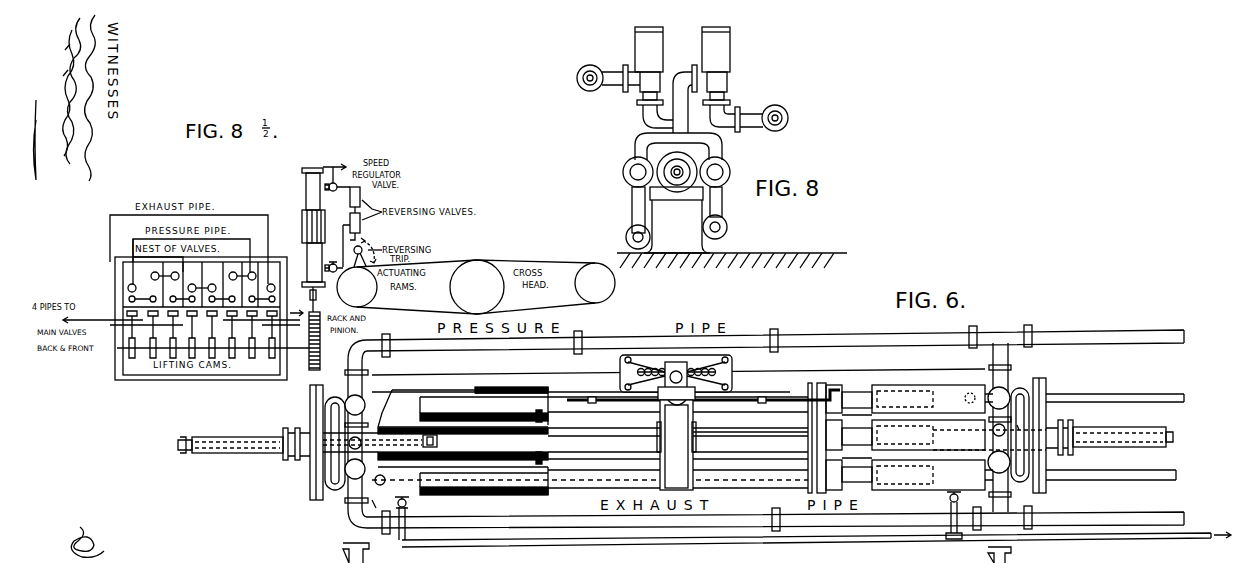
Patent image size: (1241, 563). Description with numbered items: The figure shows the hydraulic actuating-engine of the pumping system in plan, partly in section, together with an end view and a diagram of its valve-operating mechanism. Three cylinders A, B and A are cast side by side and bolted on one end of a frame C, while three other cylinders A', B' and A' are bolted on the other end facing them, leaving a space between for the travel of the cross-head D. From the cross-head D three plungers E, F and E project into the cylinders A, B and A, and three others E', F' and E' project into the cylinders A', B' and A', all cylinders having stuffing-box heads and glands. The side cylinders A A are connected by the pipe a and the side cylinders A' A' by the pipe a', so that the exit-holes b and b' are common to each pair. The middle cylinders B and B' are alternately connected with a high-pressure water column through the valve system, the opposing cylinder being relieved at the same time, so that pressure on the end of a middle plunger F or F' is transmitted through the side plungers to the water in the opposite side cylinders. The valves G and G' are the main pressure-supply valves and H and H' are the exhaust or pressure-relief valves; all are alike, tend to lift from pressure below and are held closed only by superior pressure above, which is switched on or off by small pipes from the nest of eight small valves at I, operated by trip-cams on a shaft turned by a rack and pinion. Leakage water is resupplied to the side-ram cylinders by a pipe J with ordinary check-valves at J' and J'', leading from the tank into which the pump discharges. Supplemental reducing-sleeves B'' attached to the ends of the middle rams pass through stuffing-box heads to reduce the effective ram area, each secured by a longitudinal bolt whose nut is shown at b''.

In FIG. 8, the pipe a is at (673, 162).
In FIG. 6, the pipe a is at (678, 430).
In FIG. 6, the pipe a' is at (1019, 433).
In FIG. 6, the exit-hole b is at (378, 507).
In FIG. 6, the exit-hole b' is at (968, 384).
In FIG. 6, the nut b'' is at (680, 442).
In FIG. 6, the side cylinder A is at (461, 441).
In FIG. 6, the side cylinder A' is at (996, 438).
In FIG. 6, the middle cylinder B is at (380, 443).
In FIG. 6, the middle cylinder B' is at (936, 435).
In FIG. 6, the supplemental reducing-sleeve B'' is at (679, 436).
In FIG. 8, the frame C is at (677, 220).
In FIG. 6, the cross-head D is at (676, 438).
In FIG. 6, the side plunger E is at (590, 431).
In FIG. 6, the side plunger E' is at (703, 419).
In FIG. 6, the middle plunger F is at (593, 444).
In FIG. 6, the middle plunger F' is at (750, 437).
In FIG. 8, the main pressure-supply valve G is at (716, 66).
In FIG. 6, the main pressure-supply valve G is at (355, 405).
In FIG. 6, the main pressure-supply valve G' is at (999, 398).
In FIG. 8, the exhaust valve H is at (649, 66).
In FIG. 6, the exhaust valve H is at (355, 469).
In FIG. 6, the exhaust valve H' is at (999, 462).
In FIG. 6, the nest of eight valves I is at (680, 373).
In FIG. 6, the pipe J is at (816, 546).
In FIG. 6, the check-valve J' is at (1067, 525).
In FIG. 6, the check-valve J'' is at (410, 518).